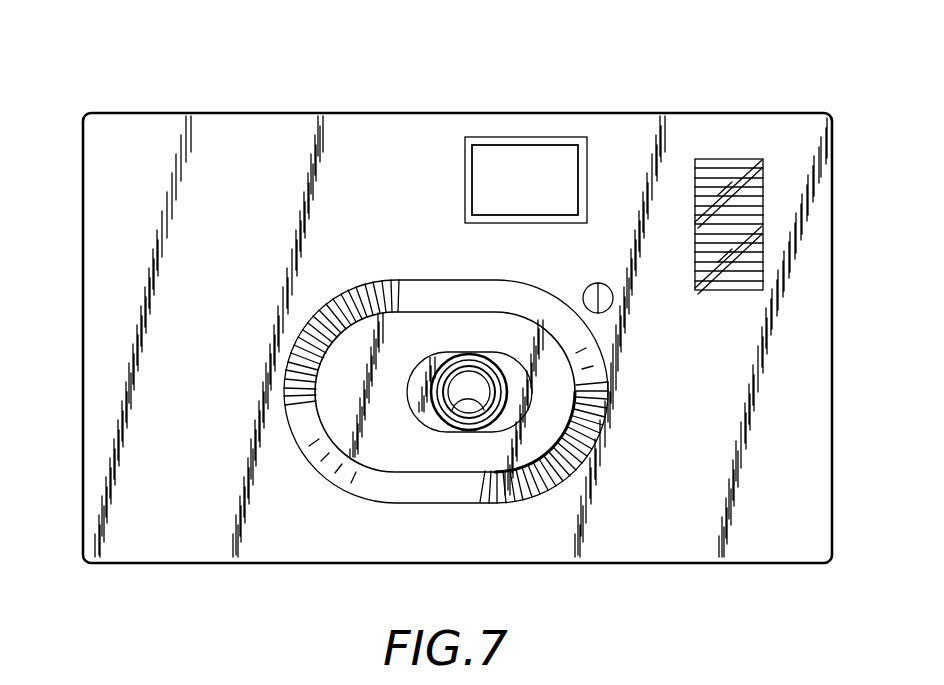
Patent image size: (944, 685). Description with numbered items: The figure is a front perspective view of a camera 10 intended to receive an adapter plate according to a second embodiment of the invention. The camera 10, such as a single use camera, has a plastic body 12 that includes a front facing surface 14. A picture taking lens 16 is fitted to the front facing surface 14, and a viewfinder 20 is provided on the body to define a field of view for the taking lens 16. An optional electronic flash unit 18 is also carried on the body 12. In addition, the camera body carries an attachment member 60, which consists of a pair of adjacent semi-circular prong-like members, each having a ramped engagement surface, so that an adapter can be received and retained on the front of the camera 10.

The camera 10 is at (126, 88).
The plastic body 12 is at (294, 106).
The front facing surface 14 is at (787, 452).
The picture taking lens 16 is at (446, 406).
The electronic flash unit 18 is at (748, 159).
The viewfinder 20 is at (552, 146).
The attachment member 60 is at (589, 286).